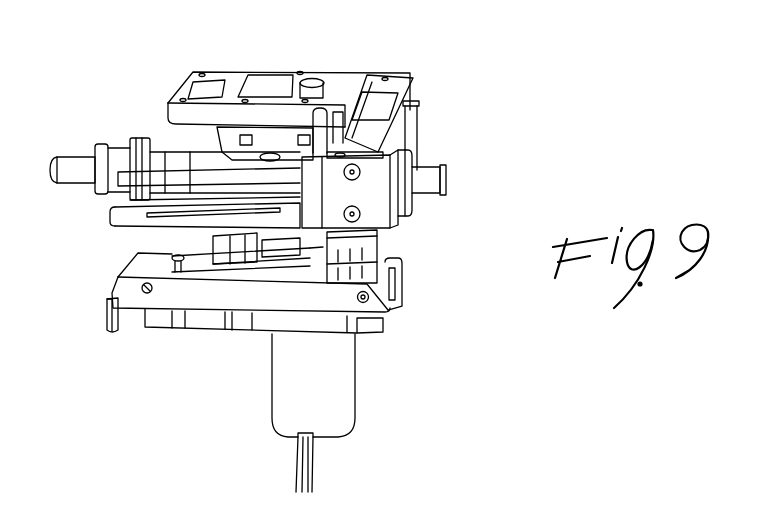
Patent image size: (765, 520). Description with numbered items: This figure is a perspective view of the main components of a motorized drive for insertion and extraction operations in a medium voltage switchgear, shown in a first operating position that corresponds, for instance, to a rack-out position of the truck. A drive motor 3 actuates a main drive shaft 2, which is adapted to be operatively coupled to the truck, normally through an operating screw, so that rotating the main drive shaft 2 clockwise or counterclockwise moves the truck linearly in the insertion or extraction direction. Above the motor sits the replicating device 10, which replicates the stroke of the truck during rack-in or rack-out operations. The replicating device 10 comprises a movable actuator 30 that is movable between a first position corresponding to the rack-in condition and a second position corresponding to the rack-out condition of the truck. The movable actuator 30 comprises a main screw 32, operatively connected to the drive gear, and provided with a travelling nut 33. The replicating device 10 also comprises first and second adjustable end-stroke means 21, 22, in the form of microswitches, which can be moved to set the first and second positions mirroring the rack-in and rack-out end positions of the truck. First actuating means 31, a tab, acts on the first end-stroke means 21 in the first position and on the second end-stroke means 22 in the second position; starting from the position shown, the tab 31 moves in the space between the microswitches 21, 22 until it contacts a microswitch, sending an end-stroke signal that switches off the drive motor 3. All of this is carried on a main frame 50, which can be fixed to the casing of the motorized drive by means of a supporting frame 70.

The main drive shaft 2 is at (78, 158).
The drive motor 3 is at (345, 388).
The replicating device 10 is at (95, 377).
The first adjustable end-stroke means 21 is at (277, 265).
The second adjustable end-stroke means 22 is at (360, 260).
The movable actuator 30 is at (100, 250).
The first actuating means 31 is at (316, 263).
The main screw 32 is at (148, 175).
The travelling nut 33 is at (297, 178).
The main frame 50 is at (390, 328).
The supporting frame 70 is at (370, 297).